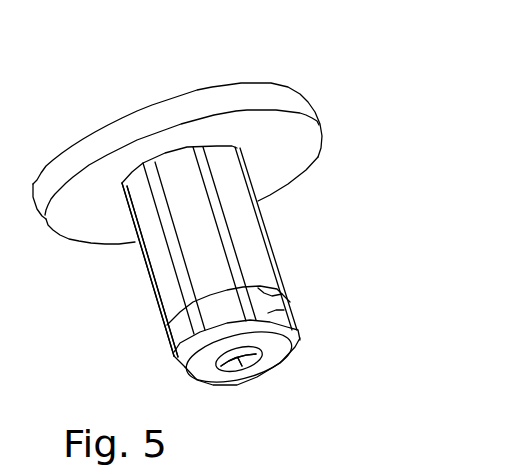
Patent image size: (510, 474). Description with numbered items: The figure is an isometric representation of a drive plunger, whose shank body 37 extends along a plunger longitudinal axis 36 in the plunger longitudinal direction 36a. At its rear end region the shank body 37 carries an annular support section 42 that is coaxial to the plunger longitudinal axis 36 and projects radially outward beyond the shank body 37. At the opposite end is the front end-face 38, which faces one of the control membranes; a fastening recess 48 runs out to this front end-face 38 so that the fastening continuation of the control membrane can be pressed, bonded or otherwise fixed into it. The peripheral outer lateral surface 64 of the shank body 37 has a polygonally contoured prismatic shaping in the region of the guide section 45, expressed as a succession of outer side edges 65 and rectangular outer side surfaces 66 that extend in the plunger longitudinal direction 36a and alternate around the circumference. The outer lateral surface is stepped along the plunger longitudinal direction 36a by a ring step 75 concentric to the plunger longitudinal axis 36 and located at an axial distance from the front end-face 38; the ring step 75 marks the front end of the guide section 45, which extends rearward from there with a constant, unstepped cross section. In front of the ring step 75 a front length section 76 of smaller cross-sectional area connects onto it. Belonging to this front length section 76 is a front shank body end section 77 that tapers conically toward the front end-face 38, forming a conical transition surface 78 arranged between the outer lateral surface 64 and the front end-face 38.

The annular support section 42 is at (277, 88).
The guide section 45 is at (246, 230).
The outer side surfaces 66 is at (159, 196).
The outer side edges 65 is at (247, 251).
The ring step 75 is at (260, 289).
The front length section 76 is at (268, 313).
The shank body 37 is at (136, 269).
The peripheral outer lateral surface 64 is at (144, 310).
The conical transition surface 78 is at (179, 345).
The front shank body end section 77 is at (182, 365).
The front end-face 38 is at (292, 363).
The fastening recess 48 is at (236, 371).
The plunger longitudinal axis 36 is at (254, 374).
The plunger longitudinal direction 36a is at (262, 396).